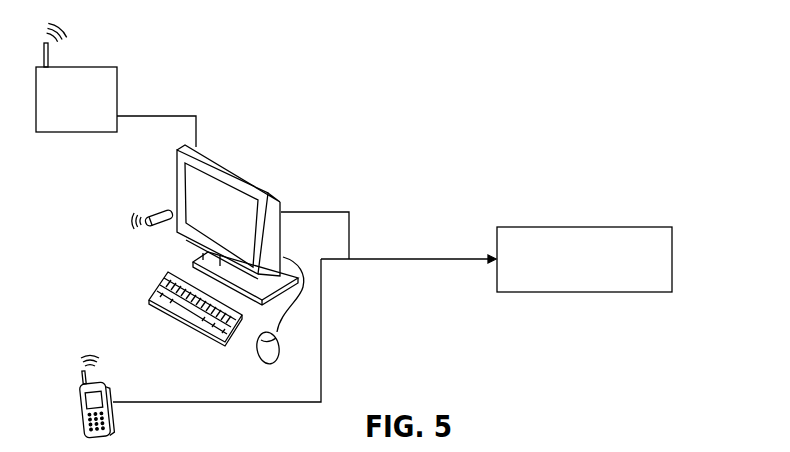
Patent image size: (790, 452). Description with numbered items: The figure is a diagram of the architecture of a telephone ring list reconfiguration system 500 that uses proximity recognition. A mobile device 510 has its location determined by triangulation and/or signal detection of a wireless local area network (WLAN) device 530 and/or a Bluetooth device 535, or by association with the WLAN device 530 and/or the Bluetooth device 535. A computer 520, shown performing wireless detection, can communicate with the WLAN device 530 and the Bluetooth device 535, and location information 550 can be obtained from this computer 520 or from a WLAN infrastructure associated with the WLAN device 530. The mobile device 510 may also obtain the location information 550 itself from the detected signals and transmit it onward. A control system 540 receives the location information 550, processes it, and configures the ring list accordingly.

The telephone ring list reconfiguration system 500 is at (732, 148).
The mobile device 510 is at (82, 402).
The computer 520 is at (282, 203).
The wireless local area network (WLAN) device 530 is at (117, 88).
The Bluetooth device 535 is at (157, 230).
The control system 540 is at (595, 227).
The location information 550 is at (452, 315).